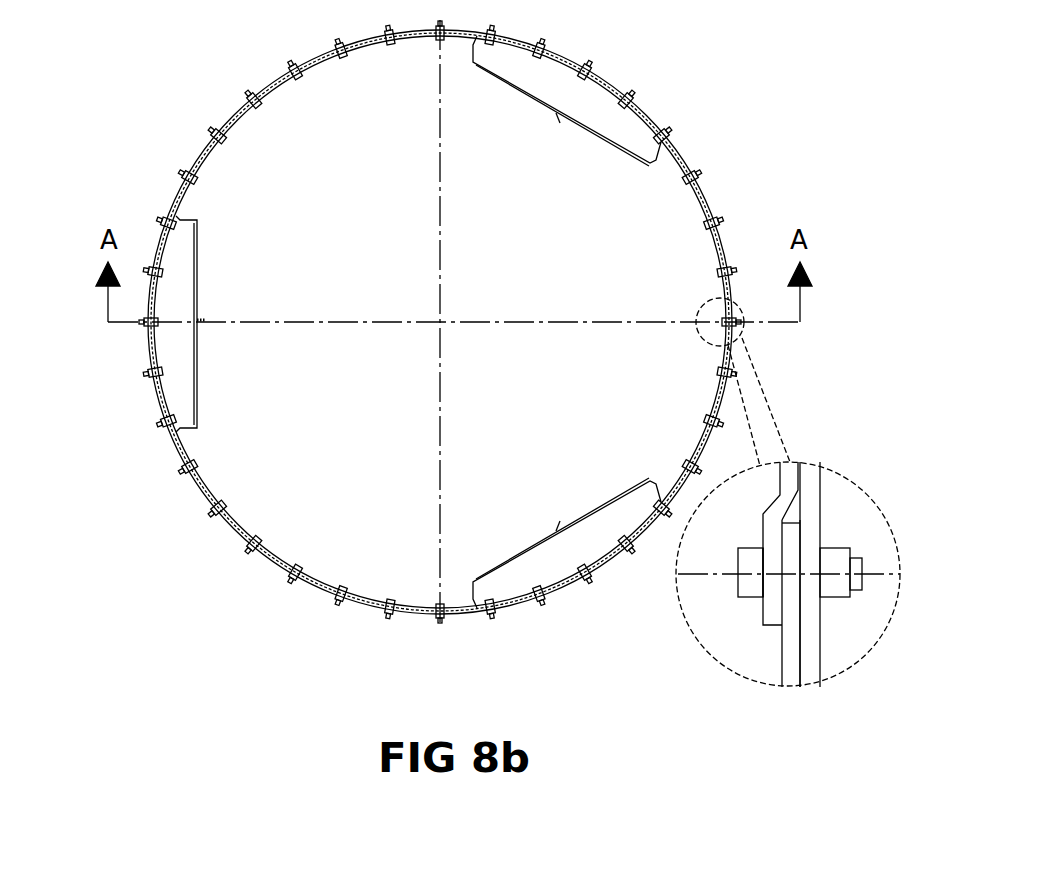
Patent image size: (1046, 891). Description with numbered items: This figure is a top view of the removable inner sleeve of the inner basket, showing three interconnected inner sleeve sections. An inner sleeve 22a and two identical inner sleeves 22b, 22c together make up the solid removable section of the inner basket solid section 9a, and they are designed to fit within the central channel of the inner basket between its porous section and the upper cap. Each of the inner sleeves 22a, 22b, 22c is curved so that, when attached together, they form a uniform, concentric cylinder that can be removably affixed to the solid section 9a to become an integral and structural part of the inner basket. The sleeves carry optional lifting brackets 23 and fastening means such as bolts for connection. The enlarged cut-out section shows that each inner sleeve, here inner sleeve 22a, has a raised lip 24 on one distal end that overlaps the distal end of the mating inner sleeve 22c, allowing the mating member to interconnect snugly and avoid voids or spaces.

The inner sleeve 22a is at (712, 196).
The inner sleeve 22b is at (153, 411).
The inner sleeve 22c is at (470, 619).
The lifting bracket 23 is at (622, 135).
The inner basket solid section 9a is at (824, 484).
The raised lip 24 is at (748, 622).